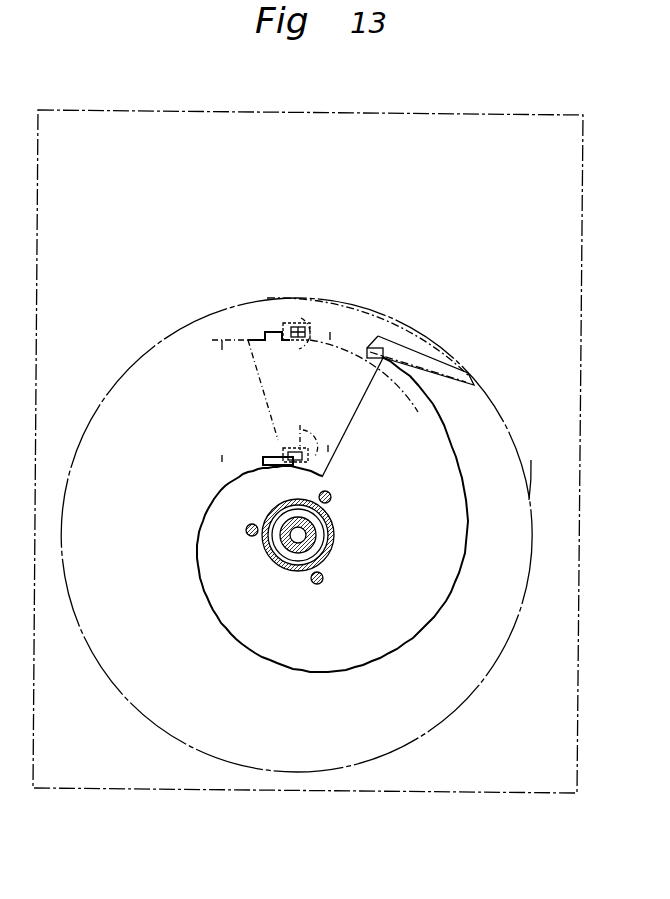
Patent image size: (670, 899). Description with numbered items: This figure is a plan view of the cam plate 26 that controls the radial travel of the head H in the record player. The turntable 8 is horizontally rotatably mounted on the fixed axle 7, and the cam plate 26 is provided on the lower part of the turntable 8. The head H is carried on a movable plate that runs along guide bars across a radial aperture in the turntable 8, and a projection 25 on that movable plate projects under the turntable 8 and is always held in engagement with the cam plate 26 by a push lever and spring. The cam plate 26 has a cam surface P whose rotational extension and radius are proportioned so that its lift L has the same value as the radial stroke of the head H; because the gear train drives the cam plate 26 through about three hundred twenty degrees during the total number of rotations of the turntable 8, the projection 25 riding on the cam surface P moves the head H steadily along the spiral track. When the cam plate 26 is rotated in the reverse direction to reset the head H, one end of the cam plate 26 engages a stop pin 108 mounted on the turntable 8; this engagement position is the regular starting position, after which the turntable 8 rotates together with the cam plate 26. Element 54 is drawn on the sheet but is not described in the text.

The fixed axle 7 is at (284, 470).
The turntable 8 is at (503, 628).
The projection 25 is at (268, 332).
The cam plate 26 is at (357, 356).
The housing frame 54 is at (477, 791).
The stop pin 108 is at (485, 345).
The cam surface P is at (528, 477).
The head H is at (310, 364).
The lift L is at (271, 401).